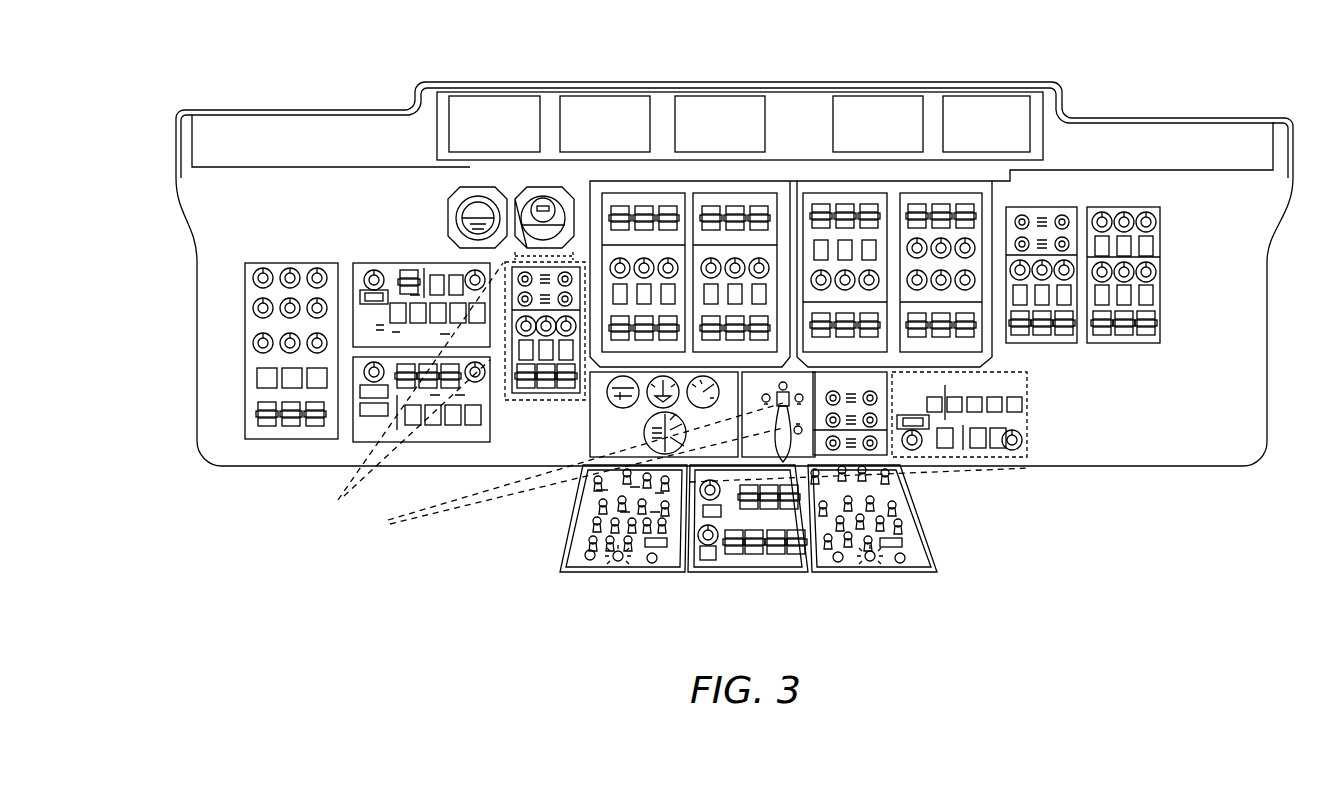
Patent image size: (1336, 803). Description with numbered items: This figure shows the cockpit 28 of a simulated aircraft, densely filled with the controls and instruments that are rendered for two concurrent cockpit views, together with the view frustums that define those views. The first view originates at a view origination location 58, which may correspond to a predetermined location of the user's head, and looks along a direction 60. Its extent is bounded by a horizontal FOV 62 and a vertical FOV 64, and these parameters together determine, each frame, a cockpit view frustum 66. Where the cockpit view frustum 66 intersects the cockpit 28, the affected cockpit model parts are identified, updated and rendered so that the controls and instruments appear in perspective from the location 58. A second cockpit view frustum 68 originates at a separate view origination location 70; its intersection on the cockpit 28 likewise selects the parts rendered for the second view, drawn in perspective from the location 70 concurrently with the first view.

The cockpit 28 is at (734, 274).
The view origination location 58 is at (335, 501).
The direction 60 is at (403, 450).
The horizontal FOV 62 is at (555, 258).
The vertical FOV 64 is at (503, 400).
The cockpit view frustum 66 is at (345, 452).
The cockpit view frustum 68 is at (443, 545).
The view origination location 70 is at (385, 522).